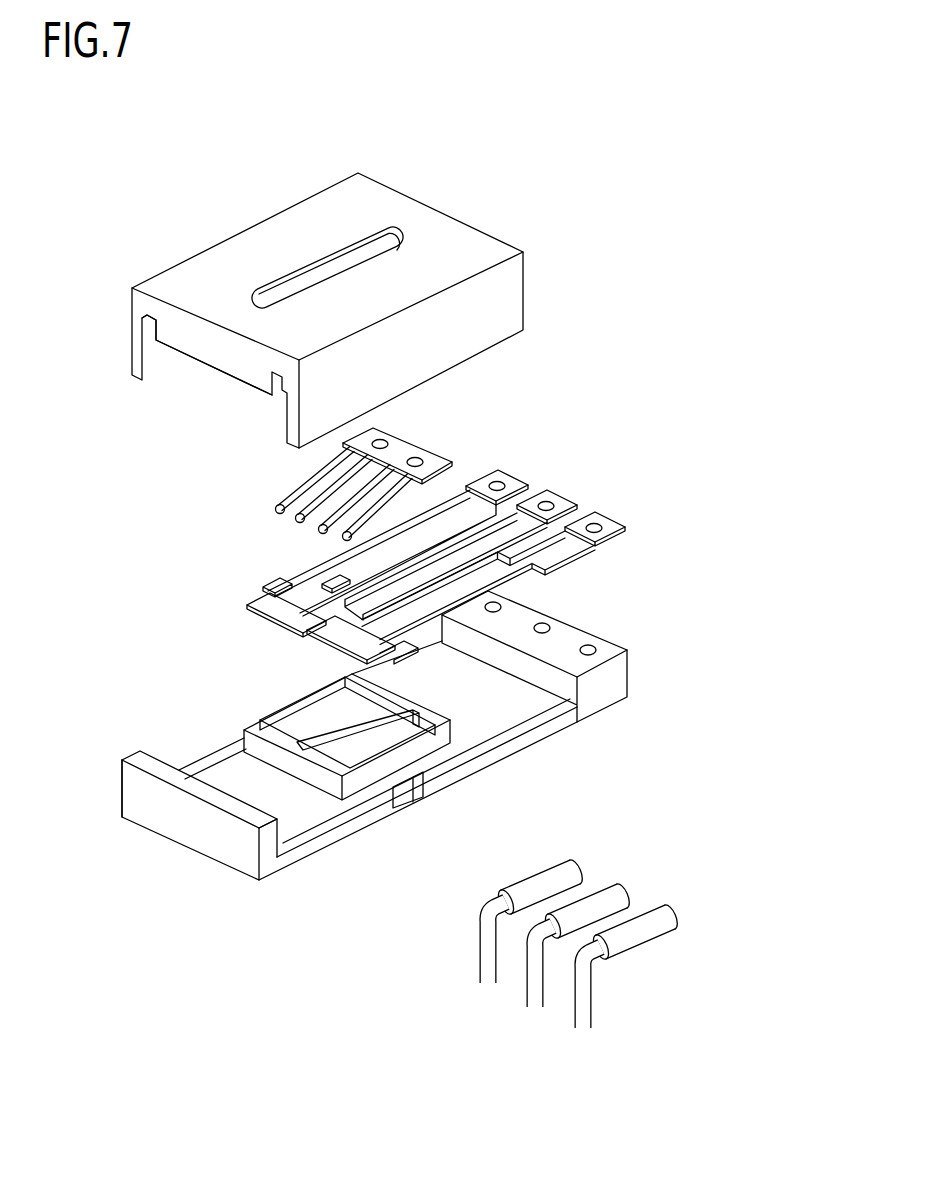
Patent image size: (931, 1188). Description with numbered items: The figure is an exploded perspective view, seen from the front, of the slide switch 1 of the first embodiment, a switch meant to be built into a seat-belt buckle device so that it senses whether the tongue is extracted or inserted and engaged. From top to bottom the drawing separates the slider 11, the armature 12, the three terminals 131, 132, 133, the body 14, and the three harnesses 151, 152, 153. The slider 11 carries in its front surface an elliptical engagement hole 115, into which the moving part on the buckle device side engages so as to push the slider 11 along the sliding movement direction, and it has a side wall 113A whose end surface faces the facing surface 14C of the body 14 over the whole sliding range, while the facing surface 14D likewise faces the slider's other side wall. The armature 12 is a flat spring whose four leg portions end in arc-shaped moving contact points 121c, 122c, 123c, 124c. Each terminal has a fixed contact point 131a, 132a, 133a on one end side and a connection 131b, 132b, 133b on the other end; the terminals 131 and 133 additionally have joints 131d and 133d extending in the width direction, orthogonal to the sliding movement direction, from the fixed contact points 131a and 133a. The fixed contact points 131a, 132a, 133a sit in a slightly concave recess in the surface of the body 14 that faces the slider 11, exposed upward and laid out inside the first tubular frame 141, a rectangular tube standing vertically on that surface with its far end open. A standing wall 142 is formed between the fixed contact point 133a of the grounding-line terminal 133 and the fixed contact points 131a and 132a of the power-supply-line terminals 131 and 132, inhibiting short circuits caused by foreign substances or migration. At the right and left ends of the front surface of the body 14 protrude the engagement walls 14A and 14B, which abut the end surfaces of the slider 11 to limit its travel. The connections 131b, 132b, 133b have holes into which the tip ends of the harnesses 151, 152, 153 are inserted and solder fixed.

The slide switch 1 is at (766, 278).
The slider 11 is at (322, 296).
The engagement hole 115 is at (318, 275).
The side wall 113A is at (222, 363).
The armature 12 is at (344, 473).
The moving contact point 121c is at (278, 505).
The moving contact point 122c is at (298, 515).
The moving contact point 123c is at (320, 527).
The moving contact point 124c is at (344, 537).
The terminal 131 is at (368, 502).
The fixed contact point 131a is at (293, 615).
The connection 131b is at (497, 468).
The joint 131d is at (265, 583).
The terminal 132 is at (403, 499).
The fixed contact point 132a is at (330, 582).
The connection 132b is at (549, 489).
The terminal 133 is at (460, 566).
The fixed contact point 133a is at (328, 633).
The connection 133b is at (608, 522).
The joint 133d is at (374, 644).
The body 14 is at (345, 725).
The engagement wall 14A is at (517, 610).
The engagement wall 14B is at (127, 765).
The facing surface 14C is at (208, 765).
The facing surface 14D is at (527, 713).
The first tubular frame 141 is at (268, 722).
The standing wall 142 is at (358, 740).
The harness 151 is at (585, 857).
The harness 152 is at (639, 882).
The harness 153 is at (685, 909).